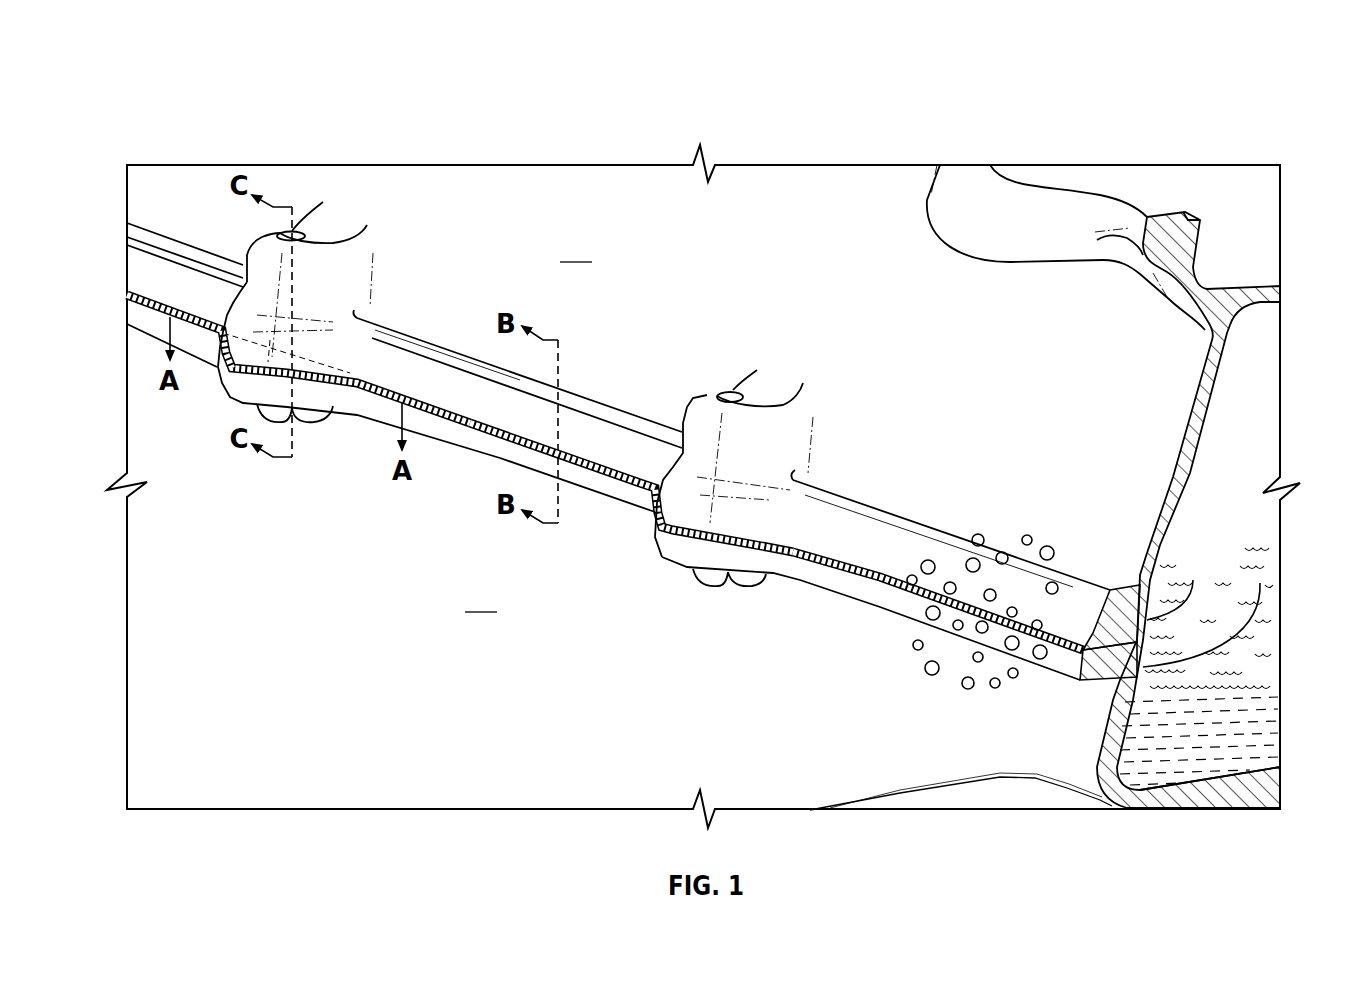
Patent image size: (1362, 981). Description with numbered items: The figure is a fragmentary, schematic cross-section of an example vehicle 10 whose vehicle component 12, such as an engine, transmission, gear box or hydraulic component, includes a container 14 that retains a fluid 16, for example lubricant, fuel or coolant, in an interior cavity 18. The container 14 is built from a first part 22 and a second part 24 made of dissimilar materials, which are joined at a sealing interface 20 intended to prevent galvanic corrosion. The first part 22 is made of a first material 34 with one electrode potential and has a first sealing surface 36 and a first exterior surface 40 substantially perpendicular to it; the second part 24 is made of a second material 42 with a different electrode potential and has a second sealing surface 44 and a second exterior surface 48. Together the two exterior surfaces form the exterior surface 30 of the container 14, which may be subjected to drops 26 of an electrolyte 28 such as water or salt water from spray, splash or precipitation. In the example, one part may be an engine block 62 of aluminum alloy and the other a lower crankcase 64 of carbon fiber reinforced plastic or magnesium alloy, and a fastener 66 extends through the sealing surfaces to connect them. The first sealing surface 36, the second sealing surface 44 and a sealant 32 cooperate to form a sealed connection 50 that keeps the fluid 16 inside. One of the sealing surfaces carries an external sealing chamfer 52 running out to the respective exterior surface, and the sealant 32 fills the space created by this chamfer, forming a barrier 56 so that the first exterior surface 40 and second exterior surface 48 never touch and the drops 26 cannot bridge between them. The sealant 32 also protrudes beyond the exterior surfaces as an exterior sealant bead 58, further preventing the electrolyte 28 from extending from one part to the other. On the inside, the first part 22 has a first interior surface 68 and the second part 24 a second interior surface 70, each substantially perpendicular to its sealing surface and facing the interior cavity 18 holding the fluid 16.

The vehicle 10 is at (640, 87).
The vehicle component 12 is at (640, 125).
The container 14 is at (1073, 482).
The fluid 16 is at (1187, 757).
The interior cavity 18 is at (1257, 425).
The sealing interface 20 is at (605, 487).
The first part 22 is at (575, 249).
The second part 24 is at (480, 599).
The drops 26 is at (1030, 545).
The electrolyte 28 is at (1047, 552).
The exterior surface 30 is at (838, 210).
The sealant 32 is at (877, 583).
The first material 34 is at (1277, 285).
The first sealing surface 36 is at (1165, 642).
The first exterior surface 40 is at (893, 553).
The second material 42 is at (1190, 787).
The second sealing surface 44 is at (1097, 597).
The second exterior surface 48 is at (850, 582).
The sealed connection 50 is at (437, 460).
The external sealing chamfer 52 is at (1090, 647).
The barrier 56 is at (607, 477).
The exterior sealant bead 58 is at (420, 400).
The engine block 62 is at (440, 200).
The lower crankcase 64 is at (527, 777).
The fastener 66 is at (300, 423).
The first interior surface 68 is at (1179, 582).
The second interior surface 70 is at (1211, 612).